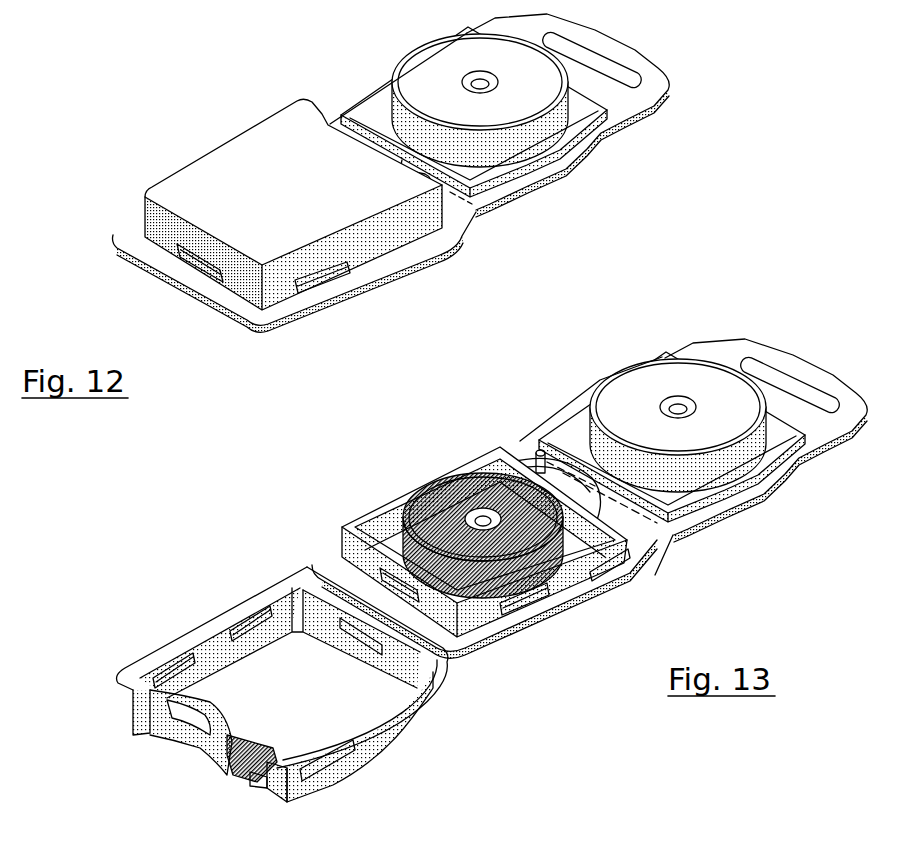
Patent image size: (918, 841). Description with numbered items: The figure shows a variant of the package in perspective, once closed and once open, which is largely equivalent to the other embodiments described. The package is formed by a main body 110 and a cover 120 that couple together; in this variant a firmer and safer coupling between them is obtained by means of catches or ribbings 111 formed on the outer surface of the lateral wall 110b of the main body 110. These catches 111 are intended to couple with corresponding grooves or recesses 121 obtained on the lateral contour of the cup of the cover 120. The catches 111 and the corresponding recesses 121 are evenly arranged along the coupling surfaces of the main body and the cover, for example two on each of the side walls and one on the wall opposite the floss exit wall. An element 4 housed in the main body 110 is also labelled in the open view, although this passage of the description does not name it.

The reel of dental floss 4 is at (490, 560).
The main body 110 is at (690, 578).
The lateral wall 110b is at (665, 533).
The catches or ribbings 111 is at (630, 567).
The cover 120 is at (284, 684).
The grooves or recesses 121 is at (240, 622).